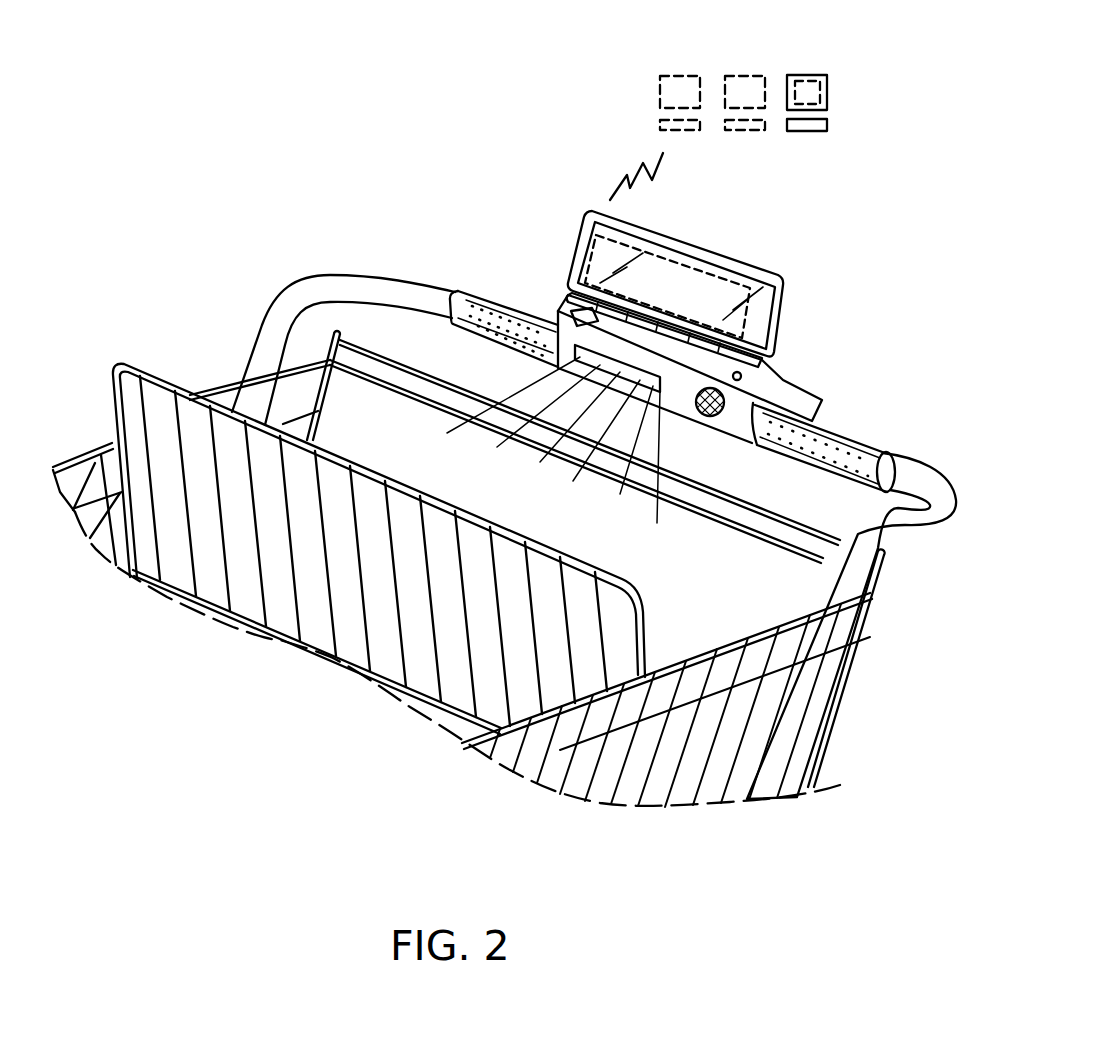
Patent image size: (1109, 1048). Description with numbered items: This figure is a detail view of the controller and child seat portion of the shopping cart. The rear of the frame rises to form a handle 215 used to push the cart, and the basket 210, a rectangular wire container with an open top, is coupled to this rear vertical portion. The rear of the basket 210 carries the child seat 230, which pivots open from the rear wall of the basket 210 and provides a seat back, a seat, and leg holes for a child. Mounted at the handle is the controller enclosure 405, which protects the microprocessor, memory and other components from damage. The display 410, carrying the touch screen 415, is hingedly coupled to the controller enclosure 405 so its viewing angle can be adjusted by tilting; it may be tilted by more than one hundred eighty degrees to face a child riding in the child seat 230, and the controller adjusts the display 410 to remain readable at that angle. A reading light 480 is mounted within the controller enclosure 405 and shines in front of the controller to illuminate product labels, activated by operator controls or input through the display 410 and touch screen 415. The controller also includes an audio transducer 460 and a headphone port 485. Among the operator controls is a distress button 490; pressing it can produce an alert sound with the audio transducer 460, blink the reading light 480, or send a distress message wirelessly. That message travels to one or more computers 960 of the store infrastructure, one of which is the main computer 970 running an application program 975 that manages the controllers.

The basket 210 is at (93, 447).
The child seat 230 is at (210, 395).
The controller enclosure 405 is at (815, 397).
The handle 215 is at (845, 452).
The audio transducer 460 is at (771, 378).
The distress button 490 is at (560, 308).
The display 410 is at (580, 240).
The touch screen 415 is at (657, 256).
The headphone port 485 is at (737, 372).
The reading light 480 is at (663, 392).
The one or more computers 960 is at (828, 63).
The application program 975 is at (827, 90).
The main computer 970 is at (812, 148).